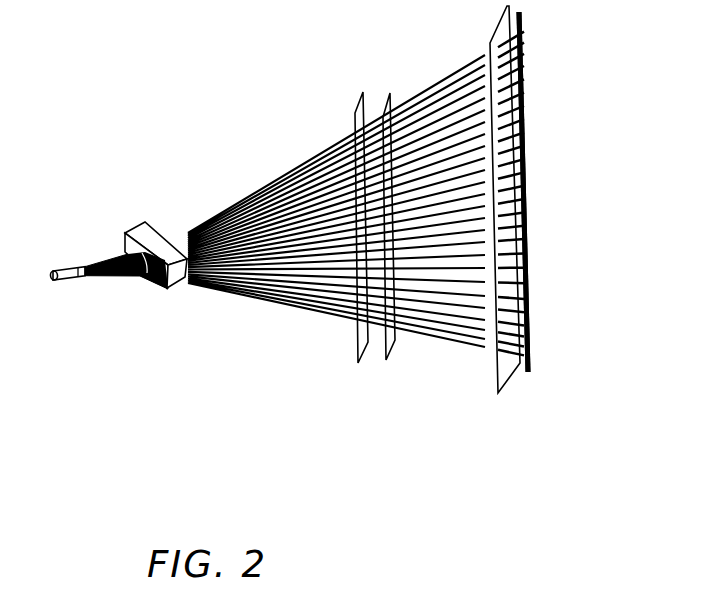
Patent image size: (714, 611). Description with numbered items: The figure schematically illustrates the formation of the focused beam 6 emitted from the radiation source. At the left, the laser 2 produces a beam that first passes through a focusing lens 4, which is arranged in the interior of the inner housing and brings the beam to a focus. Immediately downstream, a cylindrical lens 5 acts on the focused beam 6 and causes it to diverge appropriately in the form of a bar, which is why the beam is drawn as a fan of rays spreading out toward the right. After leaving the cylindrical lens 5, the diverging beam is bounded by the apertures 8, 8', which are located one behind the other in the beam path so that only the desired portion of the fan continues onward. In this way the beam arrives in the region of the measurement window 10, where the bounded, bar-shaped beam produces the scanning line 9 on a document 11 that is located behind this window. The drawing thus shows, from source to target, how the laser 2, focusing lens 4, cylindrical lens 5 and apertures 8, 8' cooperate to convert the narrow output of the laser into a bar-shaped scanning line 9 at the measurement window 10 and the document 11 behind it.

The laser 2 is at (68, 283).
The focusing lens 4 is at (145, 276).
The cylindrical lens 5 is at (180, 278).
The focused beam 6 is at (267, 300).
The aperture 8 is at (353, 285).
The aperture 8' is at (409, 286).
The measurement window 10 is at (505, 363).
The scanning line 9 is at (530, 370).
The document 11 is at (586, 252).